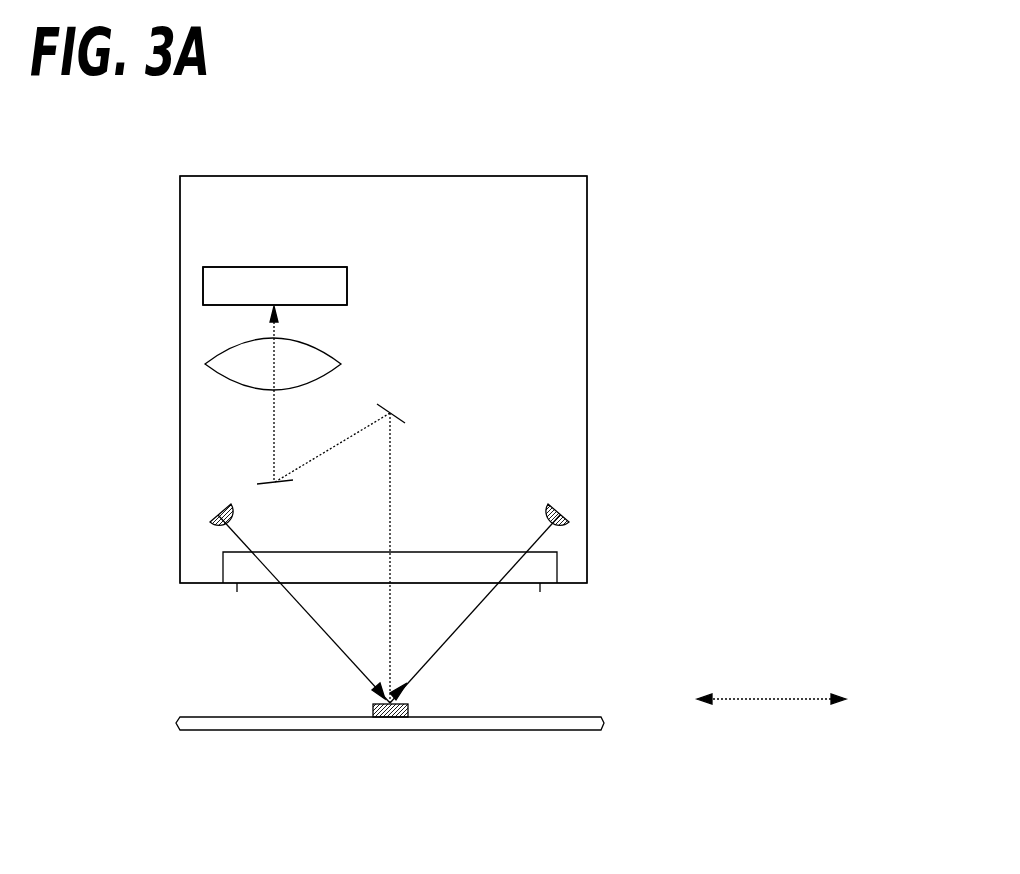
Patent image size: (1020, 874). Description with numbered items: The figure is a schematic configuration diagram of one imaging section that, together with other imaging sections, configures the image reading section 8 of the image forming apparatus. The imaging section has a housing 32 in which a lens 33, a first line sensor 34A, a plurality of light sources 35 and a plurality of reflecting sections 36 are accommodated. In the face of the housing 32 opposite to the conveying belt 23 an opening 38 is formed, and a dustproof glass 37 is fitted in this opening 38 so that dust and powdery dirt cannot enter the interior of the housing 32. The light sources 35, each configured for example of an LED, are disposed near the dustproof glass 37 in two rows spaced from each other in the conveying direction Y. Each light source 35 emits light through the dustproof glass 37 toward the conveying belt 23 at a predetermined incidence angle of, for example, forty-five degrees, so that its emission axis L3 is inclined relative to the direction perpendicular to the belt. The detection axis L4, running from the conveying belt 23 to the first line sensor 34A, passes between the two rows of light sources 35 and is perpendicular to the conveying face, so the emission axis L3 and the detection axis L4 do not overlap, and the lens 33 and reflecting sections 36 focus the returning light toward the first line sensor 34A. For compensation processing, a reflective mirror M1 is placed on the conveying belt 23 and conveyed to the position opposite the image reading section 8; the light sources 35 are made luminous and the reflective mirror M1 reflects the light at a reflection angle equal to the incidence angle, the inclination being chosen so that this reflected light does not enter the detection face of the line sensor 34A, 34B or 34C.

The image reading section 8 is at (275, 115).
The housing 32 is at (587, 337).
The lens 33 is at (333, 351).
The first line sensor 34A is at (347, 290).
The line sensor 34B is at (347, 290).
The line sensor 34C is at (347, 290).
The light source 35 is at (212, 522).
The reflecting section 36 is at (387, 404).
The dustproof glass 37 is at (403, 557).
The opening 38 is at (540, 592).
The conveying belt 23 is at (515, 730).
The reflective mirror M1 is at (410, 713).
The emission axis L3 is at (320, 628).
The detection axis L4 is at (390, 455).
The conveying direction Y is at (779, 697).